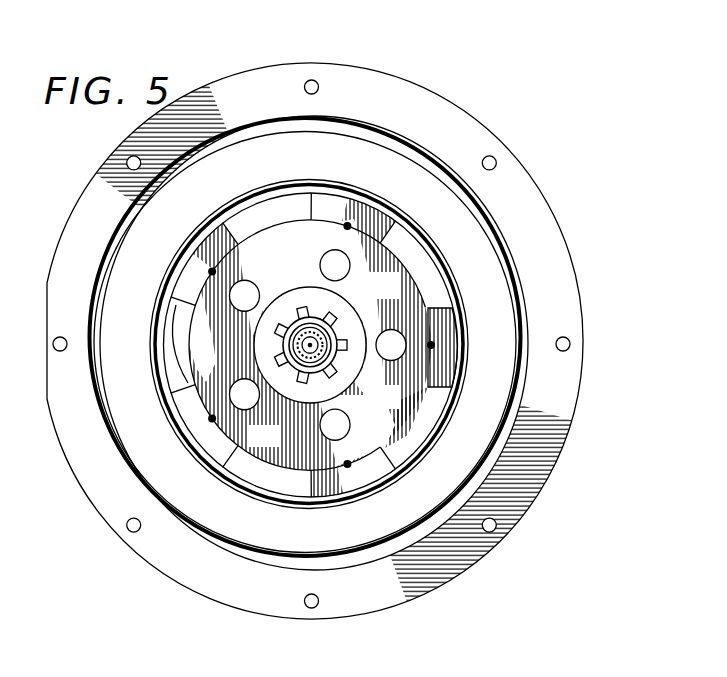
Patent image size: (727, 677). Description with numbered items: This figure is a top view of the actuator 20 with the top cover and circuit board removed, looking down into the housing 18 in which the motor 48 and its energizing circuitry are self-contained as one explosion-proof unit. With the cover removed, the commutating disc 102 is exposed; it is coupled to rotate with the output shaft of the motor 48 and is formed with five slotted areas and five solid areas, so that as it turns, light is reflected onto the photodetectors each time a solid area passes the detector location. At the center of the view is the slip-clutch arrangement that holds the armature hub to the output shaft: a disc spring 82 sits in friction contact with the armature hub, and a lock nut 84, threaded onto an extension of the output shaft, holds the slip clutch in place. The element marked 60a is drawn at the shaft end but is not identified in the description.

The housing 18 is at (476, 128).
The actuator 20 is at (563, 127).
The motor 48 is at (504, 248).
The commutating disc 102 is at (402, 196).
The disc spring 82 is at (291, 390).
The lock nut 84 is at (330, 354).
The shaft end 60a is at (318, 338).